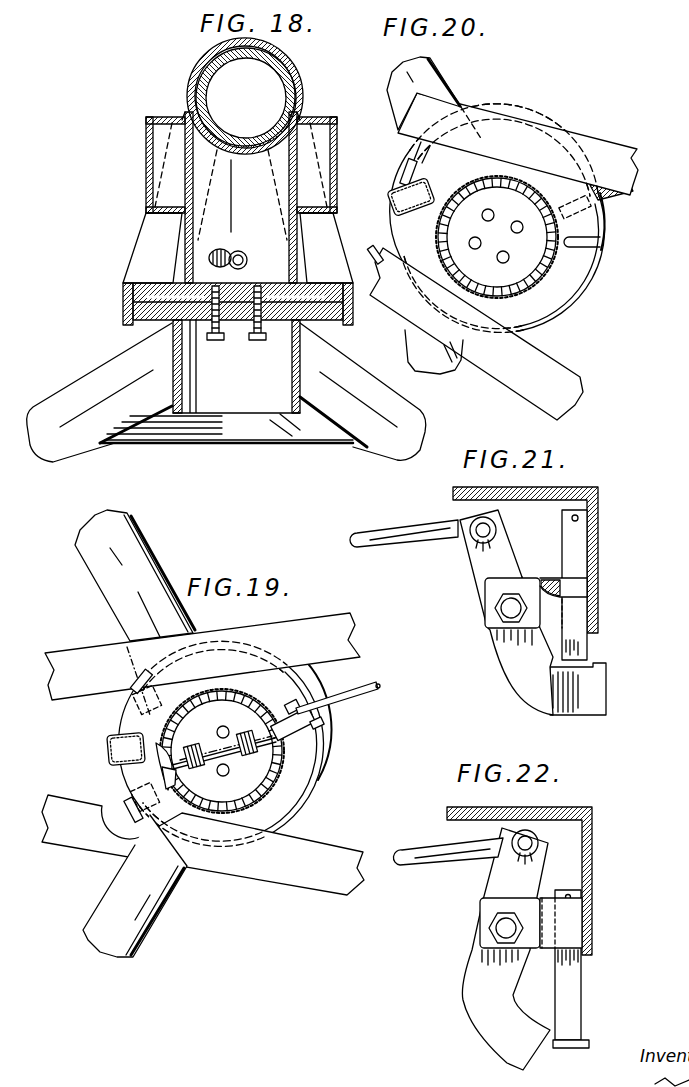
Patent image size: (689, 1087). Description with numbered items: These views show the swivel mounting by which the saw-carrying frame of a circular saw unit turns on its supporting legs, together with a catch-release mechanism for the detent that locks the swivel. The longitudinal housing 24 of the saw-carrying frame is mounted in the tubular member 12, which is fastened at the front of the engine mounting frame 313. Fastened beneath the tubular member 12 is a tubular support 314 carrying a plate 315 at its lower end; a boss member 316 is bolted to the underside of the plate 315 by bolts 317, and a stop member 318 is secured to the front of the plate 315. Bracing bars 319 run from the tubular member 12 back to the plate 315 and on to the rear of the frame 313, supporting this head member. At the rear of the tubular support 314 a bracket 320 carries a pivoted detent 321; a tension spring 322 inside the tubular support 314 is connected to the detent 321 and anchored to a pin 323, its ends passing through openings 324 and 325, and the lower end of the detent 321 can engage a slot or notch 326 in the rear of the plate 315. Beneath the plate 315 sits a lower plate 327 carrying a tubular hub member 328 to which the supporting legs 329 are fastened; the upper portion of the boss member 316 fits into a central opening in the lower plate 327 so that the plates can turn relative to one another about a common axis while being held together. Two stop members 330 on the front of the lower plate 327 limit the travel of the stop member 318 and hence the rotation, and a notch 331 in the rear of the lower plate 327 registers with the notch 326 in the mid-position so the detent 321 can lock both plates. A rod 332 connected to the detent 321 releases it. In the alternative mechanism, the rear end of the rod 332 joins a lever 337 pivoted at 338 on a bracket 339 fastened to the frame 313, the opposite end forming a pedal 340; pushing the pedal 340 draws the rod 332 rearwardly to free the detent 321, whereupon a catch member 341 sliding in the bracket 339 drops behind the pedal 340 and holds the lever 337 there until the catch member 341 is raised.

In FIG. 18, the tubular member 12 is at (192, 88).
In FIG. 18, the longitudinal housing 24 is at (207, 72).
In FIG. 18, the engine mounting frame 313 is at (147, 200).
In FIG. 18, the tubular support 314 is at (332, 215).
In FIG. 20, the tubular support 314 is at (545, 265).
In FIG. 19, the tubular support 314 is at (278, 770).
In FIG. 18, the plate 315 is at (346, 312).
In FIG. 20, the plate 315 is at (568, 290).
In FIG. 19, the plate 315 is at (313, 755).
In FIG. 18, the boss member 316 is at (258, 341).
In FIG. 18, the bolts 317 is at (218, 341).
In FIG. 20, the bolts 317 is at (497, 258).
In FIG. 19, the bolts 317 is at (224, 776).
In FIG. 20, the stop member 318 is at (403, 196).
In FIG. 19, the stop member 318 is at (108, 745).
In FIG. 18, the bracing bars 319 is at (150, 246).
In FIG. 20, the bracing bars 319 is at (562, 140).
In FIG. 19, the bracing bars 319 is at (203, 754).
In FIG. 19, the bracket 320 is at (273, 712).
In FIG. 20, the detent 321 is at (603, 201).
In FIG. 19, the detent 321 is at (310, 720).
In FIG. 18, the tension spring 322 is at (262, 253).
In FIG. 19, the tension spring 322 is at (189, 746).
In FIG. 19, the pin 323 is at (162, 775).
In FIG. 18, the opening 324 is at (228, 250).
In FIG. 19, the opening 324 is at (175, 773).
In FIG. 19, the opening 325 is at (262, 758).
In FIG. 20, the slot or notch 326 is at (600, 243).
In FIG. 19, the slot or notch 326 is at (322, 724).
In FIG. 18, the lower plate 327 is at (348, 326).
In FIG. 20, the lower plate 327 is at (600, 258).
In FIG. 19, the lower plate 327 is at (318, 782).
In FIG. 18, the tubular hub member 328 is at (250, 357).
In FIG. 18, the supporting legs 329 is at (50, 435).
In FIG. 20, the supporting legs 329 is at (457, 96).
In FIG. 19, the supporting legs 329 is at (110, 947).
In FIG. 20, the stop members 330 is at (410, 168).
In FIG. 19, the stop members 330 is at (133, 695).
In FIG. 20, the notch 331 is at (597, 208).
In FIG. 19, the rod 332 is at (380, 686).
In FIG. 21, the rod 332 is at (400, 530).
In FIG. 22, the rod 332 is at (412, 853).
In FIG. 21, the lever 337 is at (506, 612).
In FIG. 22, the lever 337 is at (506, 949).
In FIG. 21, the pivot 338 is at (507, 609).
In FIG. 22, the pivot 338 is at (500, 931).
In FIG. 21, the bracket 339 is at (486, 589).
In FIG. 22, the bracket 339 is at (481, 906).
In FIG. 21, the pedal 340 is at (606, 686).
In FIG. 22, the pedal 340 is at (536, 1060).
In FIG. 21, the catch member 341 is at (587, 644).
In FIG. 22, the catch member 341 is at (568, 987).